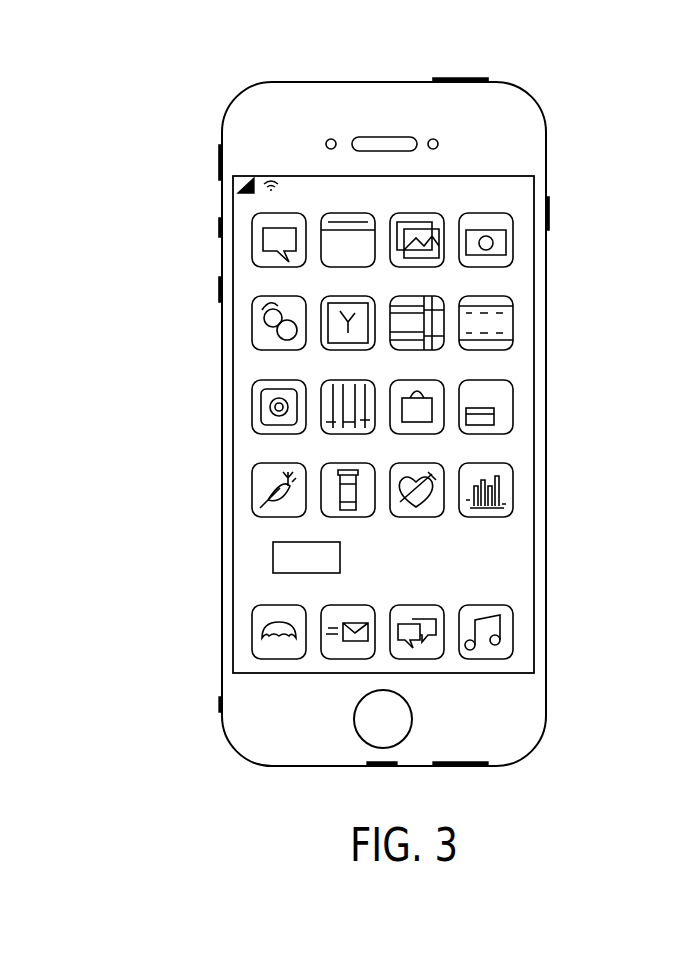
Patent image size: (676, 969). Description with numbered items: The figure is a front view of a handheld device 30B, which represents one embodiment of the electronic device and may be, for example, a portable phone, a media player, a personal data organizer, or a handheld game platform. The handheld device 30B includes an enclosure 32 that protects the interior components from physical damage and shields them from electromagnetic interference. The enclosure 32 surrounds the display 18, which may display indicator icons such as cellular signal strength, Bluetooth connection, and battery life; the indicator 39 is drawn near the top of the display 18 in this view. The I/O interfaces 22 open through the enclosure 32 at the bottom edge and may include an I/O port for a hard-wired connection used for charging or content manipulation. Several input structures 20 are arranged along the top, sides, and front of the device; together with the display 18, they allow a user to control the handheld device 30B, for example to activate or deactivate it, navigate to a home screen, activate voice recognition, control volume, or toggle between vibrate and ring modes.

The handheld device 30B is at (208, 68).
The input structures 20 is at (513, 404).
The enclosure 32 is at (548, 164).
The display 18 is at (534, 549).
The network indicator icon 39 is at (270, 178).
The I/O interfaces 22 is at (380, 767).